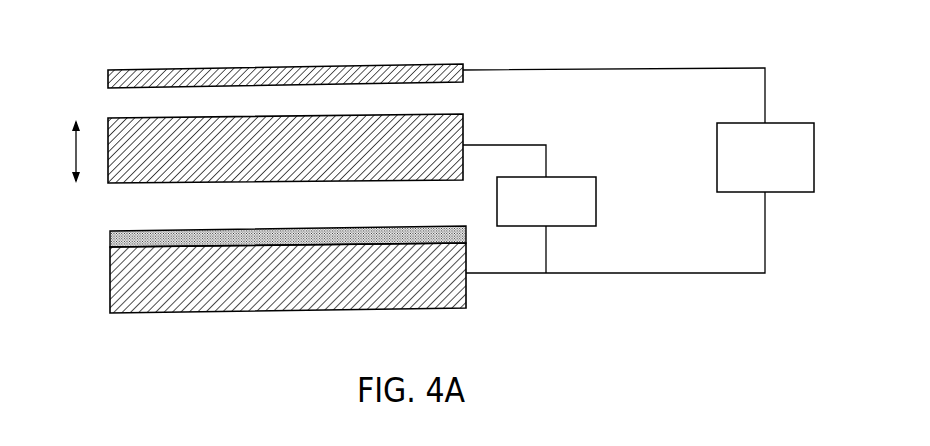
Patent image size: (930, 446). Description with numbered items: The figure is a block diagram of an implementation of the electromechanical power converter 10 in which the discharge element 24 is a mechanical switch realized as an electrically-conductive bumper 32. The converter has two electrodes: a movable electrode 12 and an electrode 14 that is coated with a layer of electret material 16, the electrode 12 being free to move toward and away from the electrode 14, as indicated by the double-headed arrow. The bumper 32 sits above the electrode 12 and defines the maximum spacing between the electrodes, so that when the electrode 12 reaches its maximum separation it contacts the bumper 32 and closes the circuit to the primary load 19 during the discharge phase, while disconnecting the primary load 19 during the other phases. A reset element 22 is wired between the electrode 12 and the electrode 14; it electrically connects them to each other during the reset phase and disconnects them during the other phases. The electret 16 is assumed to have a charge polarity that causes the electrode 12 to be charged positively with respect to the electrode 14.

The electromechanical power converter 10 is at (88, 50).
The discharge element 24 is at (441, 46).
The electrically-conductive bumper 32 is at (108, 78).
The electrode 12 is at (465, 121).
The layer of electret material 16 is at (110, 240).
The electrode 14 is at (466, 308).
The reset element 22 is at (596, 200).
The primary load 19 is at (717, 159).